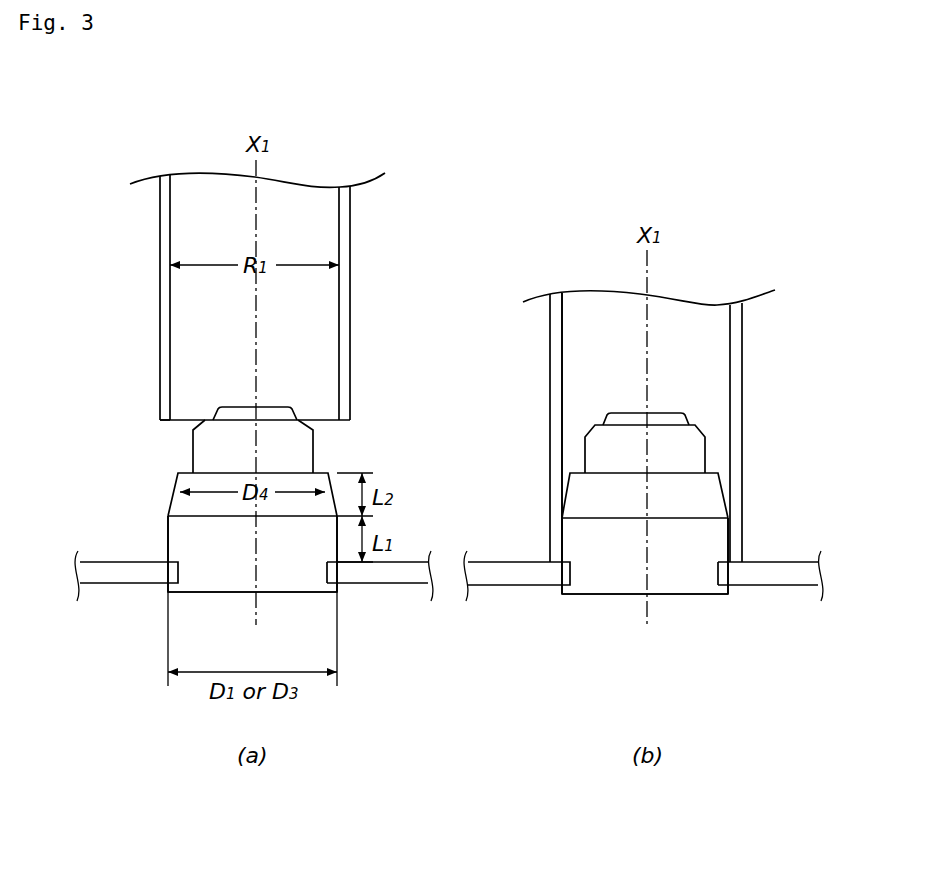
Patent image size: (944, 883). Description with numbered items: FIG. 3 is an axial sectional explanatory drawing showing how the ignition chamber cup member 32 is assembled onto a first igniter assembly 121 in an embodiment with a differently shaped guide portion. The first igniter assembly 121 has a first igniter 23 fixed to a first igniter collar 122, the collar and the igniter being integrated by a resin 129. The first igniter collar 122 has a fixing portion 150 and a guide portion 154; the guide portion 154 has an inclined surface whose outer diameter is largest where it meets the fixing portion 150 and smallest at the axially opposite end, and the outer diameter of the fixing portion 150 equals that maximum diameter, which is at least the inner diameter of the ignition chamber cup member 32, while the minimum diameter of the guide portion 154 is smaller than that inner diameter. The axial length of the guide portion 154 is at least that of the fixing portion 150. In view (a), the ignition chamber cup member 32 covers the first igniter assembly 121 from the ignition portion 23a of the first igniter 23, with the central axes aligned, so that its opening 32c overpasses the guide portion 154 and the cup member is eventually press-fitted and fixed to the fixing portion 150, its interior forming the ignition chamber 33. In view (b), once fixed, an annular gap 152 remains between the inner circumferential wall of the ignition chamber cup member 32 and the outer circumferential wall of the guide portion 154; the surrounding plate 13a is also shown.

The ignition chamber cup member 32 is at (160, 318).
The opening 32c is at (160, 423).
The ignition chamber 33 is at (216, 332).
The first igniter 23 is at (452, 388).
The ignition portion 23a is at (270, 413).
The resin 129 is at (302, 441).
The first igniter collar 122 is at (447, 529).
The guide portion 154 is at (170, 504).
The fixing portion 150 is at (170, 533).
The annular gap 152 is at (562, 487).
The first igniter assembly 121 is at (277, 600).
The plate 13a is at (385, 579).